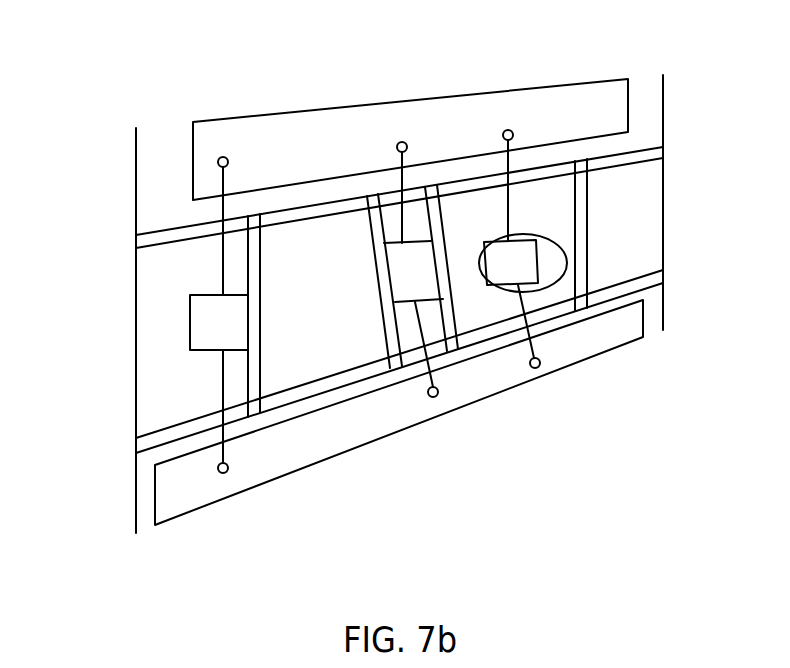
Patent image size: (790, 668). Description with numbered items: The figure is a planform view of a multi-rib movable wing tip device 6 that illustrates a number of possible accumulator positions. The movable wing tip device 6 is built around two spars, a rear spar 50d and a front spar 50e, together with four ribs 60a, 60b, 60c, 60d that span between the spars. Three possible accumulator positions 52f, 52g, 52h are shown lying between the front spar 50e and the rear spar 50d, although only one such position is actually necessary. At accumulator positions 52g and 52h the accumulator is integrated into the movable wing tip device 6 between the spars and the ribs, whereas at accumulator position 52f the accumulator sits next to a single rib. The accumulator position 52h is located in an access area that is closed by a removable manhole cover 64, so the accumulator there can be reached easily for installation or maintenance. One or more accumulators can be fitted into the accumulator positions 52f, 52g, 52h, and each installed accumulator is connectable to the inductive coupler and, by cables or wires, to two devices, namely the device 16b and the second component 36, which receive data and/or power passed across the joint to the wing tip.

The movable wing tip device 6 is at (617, 386).
The device 16b is at (396, 100).
The second component 36 is at (170, 527).
The rear spar 50d is at (658, 148).
The front spar 50e is at (662, 272).
The accumulator position 52f is at (190, 325).
The accumulator position 52g is at (385, 243).
The accumulator position 52h is at (518, 238).
The rib 60a is at (253, 413).
The rib 60b is at (398, 367).
The rib 60c is at (457, 352).
The rib 60d is at (580, 308).
The removable manhole cover 64 is at (543, 232).